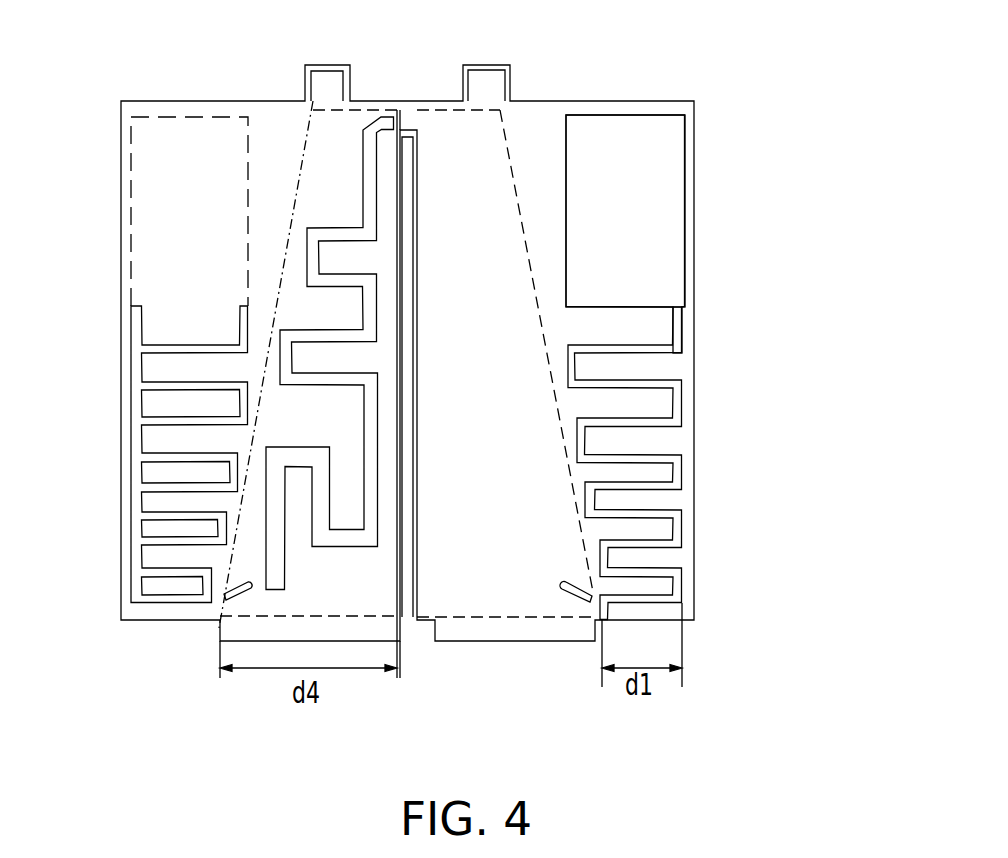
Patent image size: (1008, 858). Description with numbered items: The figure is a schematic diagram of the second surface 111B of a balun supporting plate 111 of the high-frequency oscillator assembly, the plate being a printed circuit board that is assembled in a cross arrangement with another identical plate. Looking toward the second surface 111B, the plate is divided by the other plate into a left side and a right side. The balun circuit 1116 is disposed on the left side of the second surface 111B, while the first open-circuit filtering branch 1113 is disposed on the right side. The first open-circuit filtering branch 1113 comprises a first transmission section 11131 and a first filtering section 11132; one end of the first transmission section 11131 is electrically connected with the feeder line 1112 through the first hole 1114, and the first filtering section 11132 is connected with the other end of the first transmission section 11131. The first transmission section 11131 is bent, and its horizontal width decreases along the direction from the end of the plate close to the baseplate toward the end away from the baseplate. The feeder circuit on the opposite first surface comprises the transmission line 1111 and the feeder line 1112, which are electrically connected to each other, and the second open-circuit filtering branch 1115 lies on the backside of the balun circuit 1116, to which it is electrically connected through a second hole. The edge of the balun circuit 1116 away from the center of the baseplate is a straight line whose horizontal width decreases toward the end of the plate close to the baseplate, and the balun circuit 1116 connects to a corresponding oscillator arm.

The balun supporting plate 111 is at (720, 69).
The second surface 111B is at (133, 108).
The transmission line 1111 is at (366, 138).
The feeder line 1112 is at (494, 146).
The first open-circuit filtering branch 1113 is at (812, 252).
The first transmission section 11131 is at (676, 318).
The first filtering section 11132 is at (675, 252).
The first hole 1114 is at (566, 584).
The second open-circuit filtering branch 1115 is at (138, 183).
The balun circuit 1116 is at (258, 606).